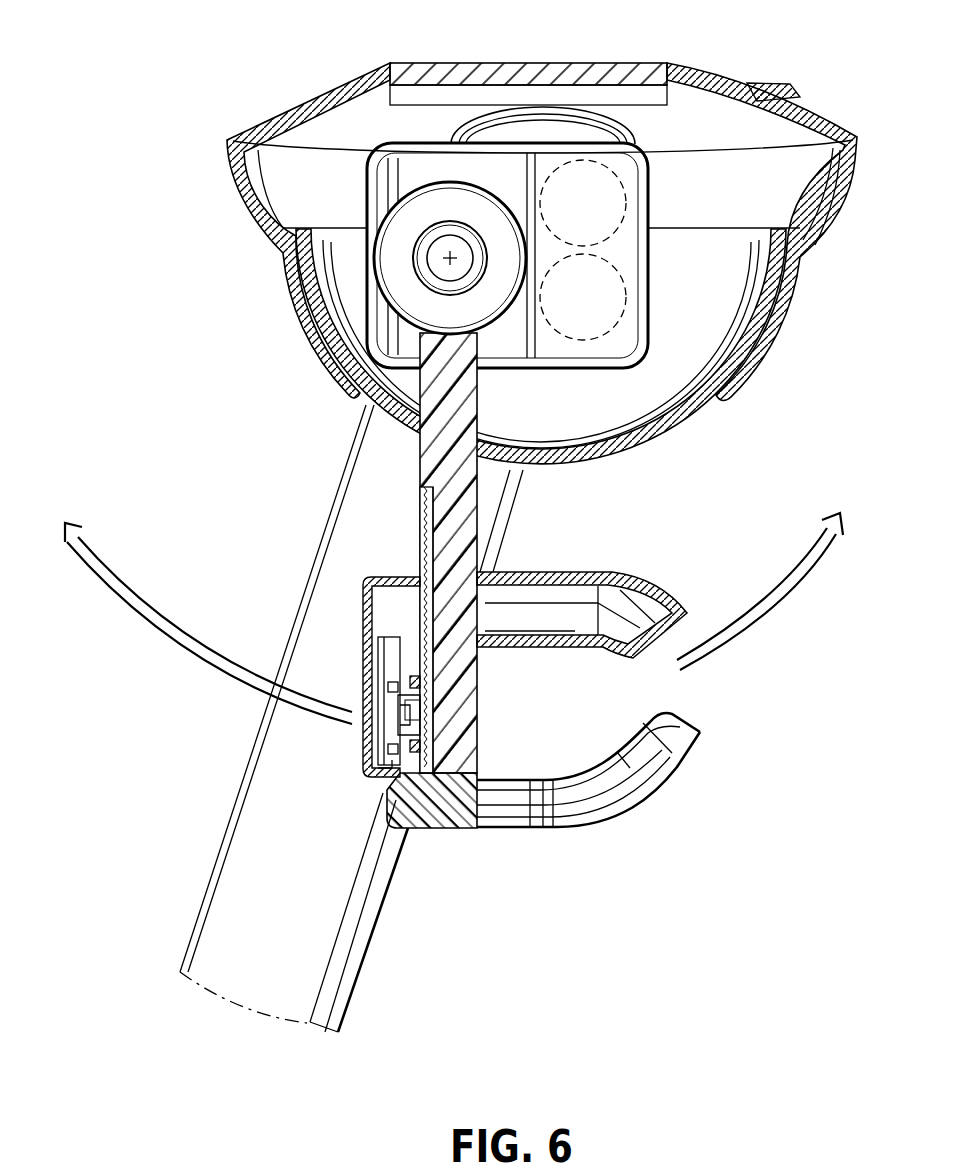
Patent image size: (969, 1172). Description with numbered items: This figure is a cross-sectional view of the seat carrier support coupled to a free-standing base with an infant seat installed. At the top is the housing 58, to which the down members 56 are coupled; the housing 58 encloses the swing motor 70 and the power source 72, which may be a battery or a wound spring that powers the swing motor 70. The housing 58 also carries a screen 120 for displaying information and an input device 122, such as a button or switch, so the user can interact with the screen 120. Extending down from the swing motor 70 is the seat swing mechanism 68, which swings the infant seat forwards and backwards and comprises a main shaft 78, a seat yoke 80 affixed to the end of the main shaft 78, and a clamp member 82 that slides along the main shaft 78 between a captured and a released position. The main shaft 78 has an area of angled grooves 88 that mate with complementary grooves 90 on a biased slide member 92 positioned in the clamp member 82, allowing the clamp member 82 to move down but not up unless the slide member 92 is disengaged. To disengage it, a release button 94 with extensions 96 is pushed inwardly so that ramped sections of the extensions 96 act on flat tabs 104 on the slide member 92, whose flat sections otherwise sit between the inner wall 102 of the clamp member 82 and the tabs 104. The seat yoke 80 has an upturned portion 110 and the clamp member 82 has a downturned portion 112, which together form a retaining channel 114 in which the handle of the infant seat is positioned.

The down member 56 is at (210, 890).
The housing 58 is at (245, 130).
The seat swing mechanism 68 is at (707, 510).
The swing motor 70 is at (397, 225).
The power source 72 is at (643, 198).
The main shaft 78 is at (423, 466).
The seat yoke 80 is at (500, 830).
The clamp member 82 is at (367, 577).
The grooves 88 is at (420, 537).
The complementary grooves 90 is at (427, 705).
The slide member 92 is at (392, 730).
The release button 94 is at (390, 640).
The extension 96 is at (417, 674).
The inner wall 102 is at (383, 775).
The flat tab 104 is at (390, 684).
The upturned portion 110 is at (673, 720).
The downturned portion 112 is at (660, 587).
The retaining channel 114 is at (590, 701).
The screen 120 is at (549, 62).
The input device 122 is at (775, 90).